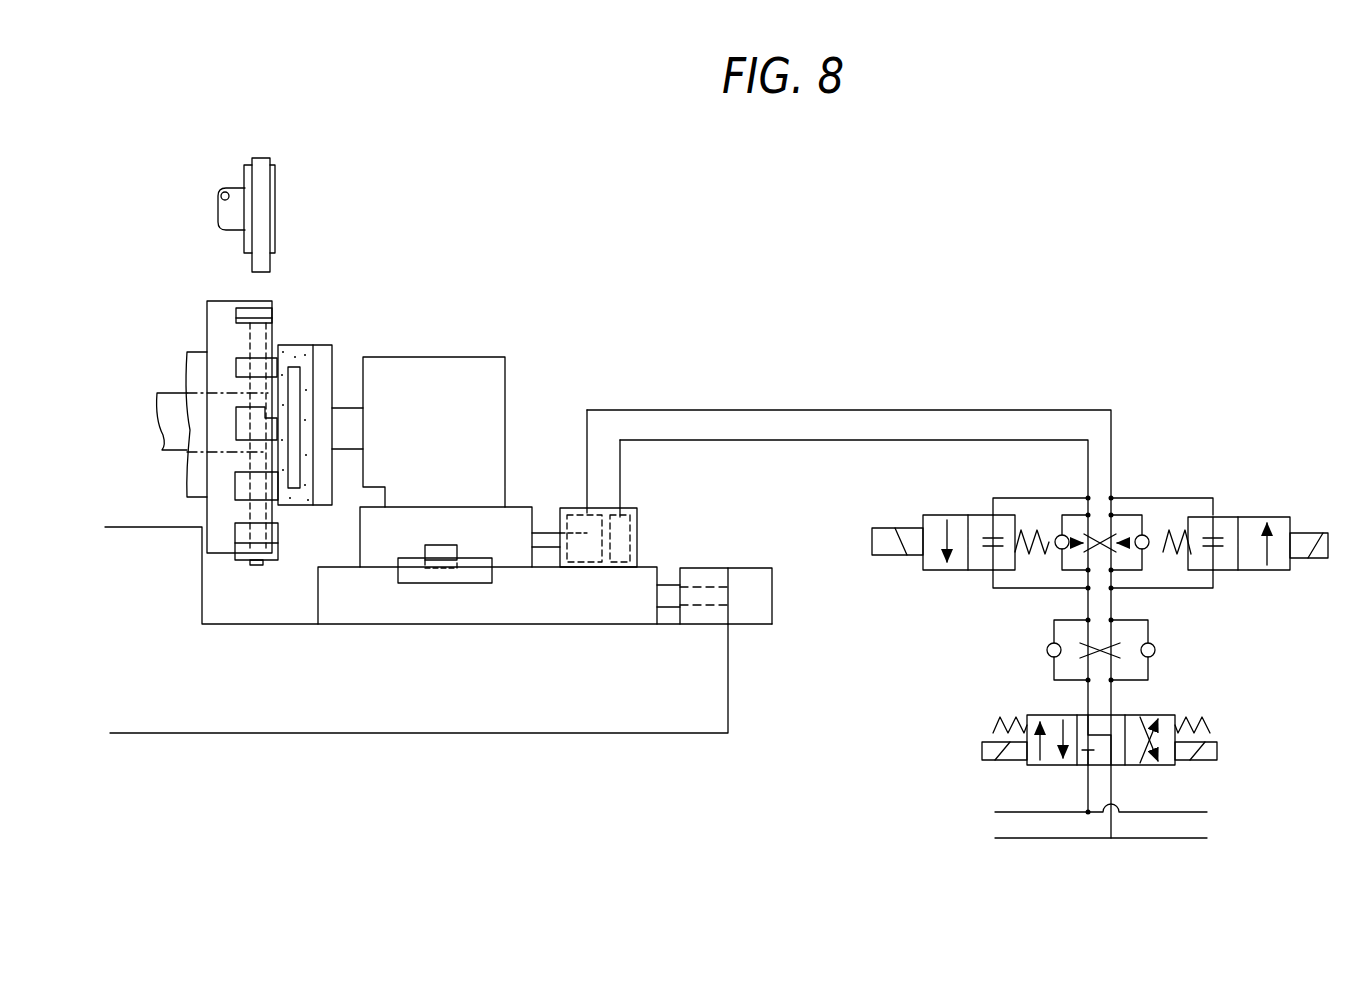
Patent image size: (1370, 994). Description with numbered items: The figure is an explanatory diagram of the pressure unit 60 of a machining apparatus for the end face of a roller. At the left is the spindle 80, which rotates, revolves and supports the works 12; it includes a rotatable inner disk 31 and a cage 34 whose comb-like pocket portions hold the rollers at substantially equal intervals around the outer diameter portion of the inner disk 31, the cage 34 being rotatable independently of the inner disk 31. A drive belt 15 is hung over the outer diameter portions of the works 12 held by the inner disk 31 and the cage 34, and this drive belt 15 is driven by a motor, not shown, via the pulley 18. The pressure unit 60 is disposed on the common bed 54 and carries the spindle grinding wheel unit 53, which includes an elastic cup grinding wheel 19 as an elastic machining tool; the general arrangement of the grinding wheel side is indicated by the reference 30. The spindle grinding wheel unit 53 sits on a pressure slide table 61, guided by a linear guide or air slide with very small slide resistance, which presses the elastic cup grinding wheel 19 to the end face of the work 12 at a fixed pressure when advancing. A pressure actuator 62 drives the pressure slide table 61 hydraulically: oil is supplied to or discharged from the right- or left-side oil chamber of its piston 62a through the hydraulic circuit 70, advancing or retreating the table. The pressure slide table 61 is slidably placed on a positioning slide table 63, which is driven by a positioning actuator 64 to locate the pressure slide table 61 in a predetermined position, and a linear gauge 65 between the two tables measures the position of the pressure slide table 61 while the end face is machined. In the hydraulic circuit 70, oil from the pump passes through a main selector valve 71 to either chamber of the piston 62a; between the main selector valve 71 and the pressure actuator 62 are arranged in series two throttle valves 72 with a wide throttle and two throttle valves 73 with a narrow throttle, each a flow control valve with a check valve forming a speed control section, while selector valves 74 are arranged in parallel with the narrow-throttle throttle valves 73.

The work 12 is at (240, 360).
The drive belt 15 is at (263, 265).
The pulley 18 is at (273, 217).
The elastic cup grinding wheel 19 is at (300, 348).
The tool unit 30 is at (442, 256).
The inner disk 31 is at (256, 415).
The cage 34 is at (266, 393).
The spindle grinding wheel unit 53 is at (273, 322).
The common bed 54 is at (708, 686).
The pressure unit 60 is at (551, 470).
The pressure slide table 61 is at (380, 538).
The pressure actuator 62 is at (638, 527).
The piston 62a is at (583, 530).
The positioning slide table 63 is at (632, 592).
The positioning actuator 64 is at (757, 580).
The linear gauge 65 is at (450, 545).
The hydraulic circuit 70 is at (1117, 611).
The main selector valve 71 is at (1158, 715).
The throttle valve with a wide throttle 72 is at (1054, 632).
The throttle valve with a narrow throttle 73 is at (1062, 515).
The selector valve 74 is at (952, 515).
The spindle 80 is at (154, 420).